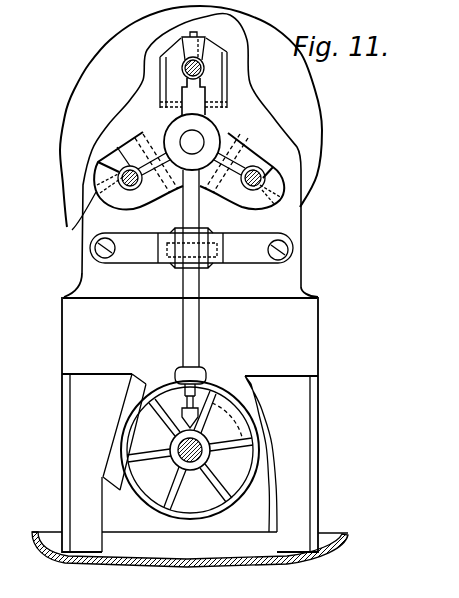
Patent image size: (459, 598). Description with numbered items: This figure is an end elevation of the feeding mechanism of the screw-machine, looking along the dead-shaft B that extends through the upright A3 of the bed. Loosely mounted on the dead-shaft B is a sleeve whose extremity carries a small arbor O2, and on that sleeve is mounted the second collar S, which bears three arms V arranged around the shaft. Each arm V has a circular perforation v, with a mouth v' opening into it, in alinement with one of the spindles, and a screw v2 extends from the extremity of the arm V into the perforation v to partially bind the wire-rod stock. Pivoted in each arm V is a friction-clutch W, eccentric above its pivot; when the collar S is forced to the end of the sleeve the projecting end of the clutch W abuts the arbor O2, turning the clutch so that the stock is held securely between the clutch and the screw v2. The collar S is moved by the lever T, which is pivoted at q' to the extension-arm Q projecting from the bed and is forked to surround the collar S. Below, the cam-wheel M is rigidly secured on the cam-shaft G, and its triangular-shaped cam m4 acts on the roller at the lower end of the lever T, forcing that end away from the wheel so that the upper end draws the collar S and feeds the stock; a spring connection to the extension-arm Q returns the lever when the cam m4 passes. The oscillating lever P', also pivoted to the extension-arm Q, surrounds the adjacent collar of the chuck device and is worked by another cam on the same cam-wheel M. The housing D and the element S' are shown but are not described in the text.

The housing D is at (82, 77).
The upright A3 is at (243, 103).
The dead-shaft B is at (192, 142).
The small arbor O2 is at (193, 96).
The friction-clutch W is at (184, 79).
The second collar S is at (146, 117).
The arm V is at (218, 62).
The mouth v' is at (188, 111).
The circular perforation v is at (185, 132).
The screw v2 is at (205, 16).
The extension-arm Q is at (217, 245).
The pivot q' is at (210, 252).
The lever T is at (197, 323).
The oscillating lever P' is at (179, 371).
The spring S' is at (226, 374).
The triangular-shaped cam m4 is at (196, 413).
The cam-shaft G is at (182, 458).
The cam-wheel M is at (236, 498).